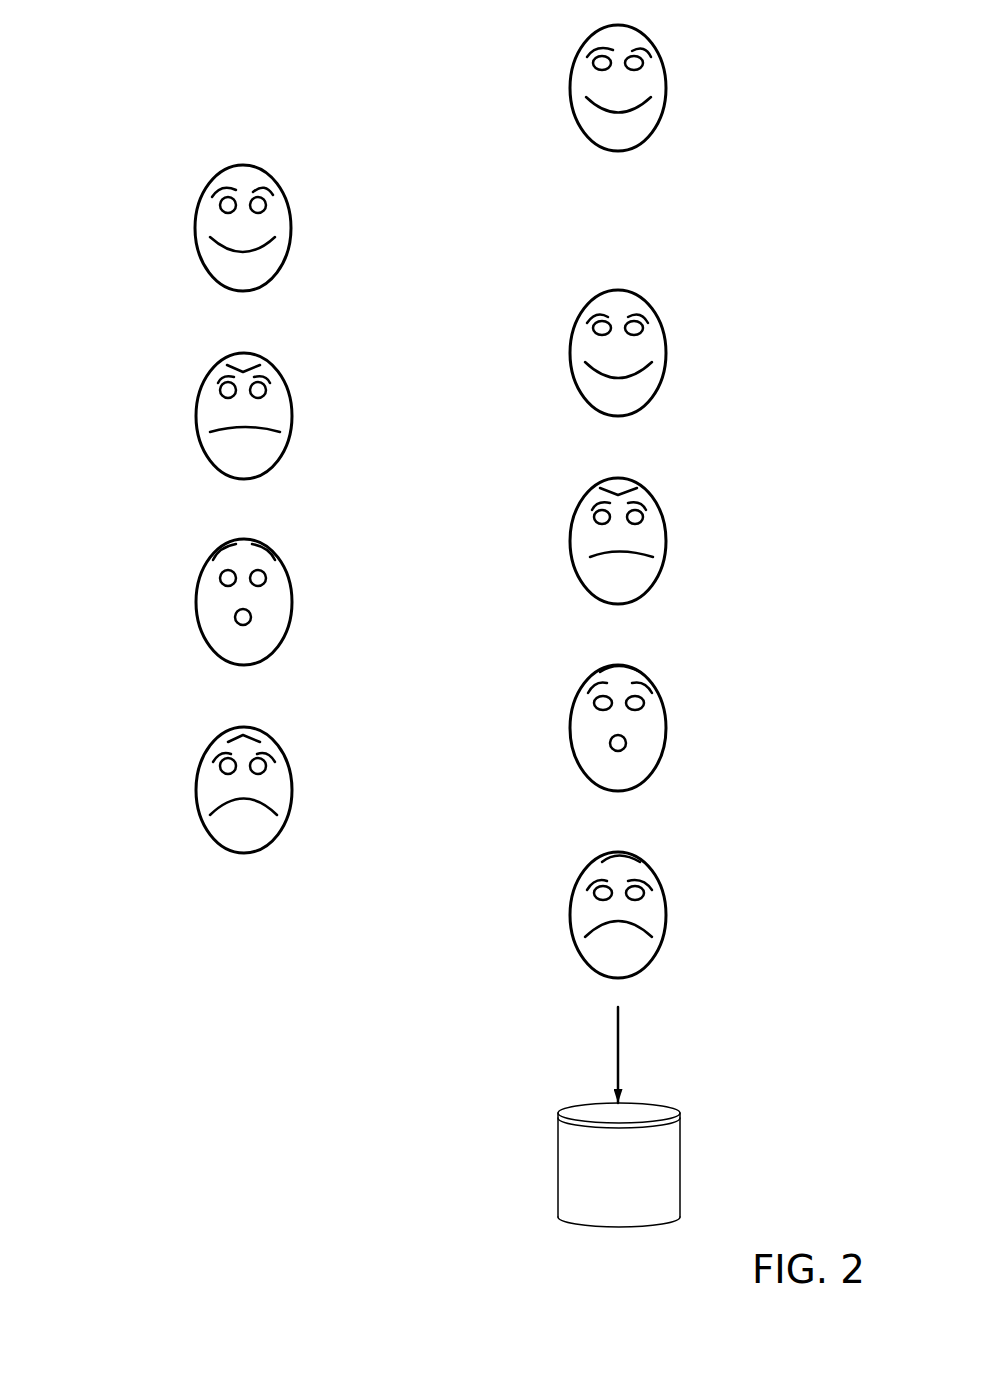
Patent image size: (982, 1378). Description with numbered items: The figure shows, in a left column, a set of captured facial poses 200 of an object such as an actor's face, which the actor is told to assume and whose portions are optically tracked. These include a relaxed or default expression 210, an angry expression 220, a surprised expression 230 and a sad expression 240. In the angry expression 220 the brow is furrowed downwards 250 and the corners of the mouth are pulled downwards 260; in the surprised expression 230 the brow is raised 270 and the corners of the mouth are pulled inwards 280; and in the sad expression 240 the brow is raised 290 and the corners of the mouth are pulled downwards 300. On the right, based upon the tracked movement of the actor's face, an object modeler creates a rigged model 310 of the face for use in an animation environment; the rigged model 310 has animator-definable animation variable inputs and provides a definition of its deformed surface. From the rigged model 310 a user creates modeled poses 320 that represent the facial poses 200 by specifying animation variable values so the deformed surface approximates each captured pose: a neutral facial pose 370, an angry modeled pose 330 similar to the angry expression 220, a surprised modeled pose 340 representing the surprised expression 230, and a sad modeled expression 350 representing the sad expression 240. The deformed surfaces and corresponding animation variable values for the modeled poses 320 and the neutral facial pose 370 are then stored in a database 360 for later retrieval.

The facial poses 200 is at (240, 133).
The relaxed or default expression 210 is at (196, 228).
The angry expression 220 is at (196, 416).
The surprised expression 230 is at (196, 602).
The sad expression 240 is at (196, 790).
The brow furrowed downwards 250 is at (283, 367).
The corners of the mouth pulled downwards 260 is at (283, 432).
The brow raised 270 is at (280, 545).
The corners of the mouth pulled inwards 280 is at (277, 618).
The brow raised 290 is at (283, 735).
The corners of the mouth pulled downwards 300 is at (283, 808).
The rigged model 310 is at (667, 88).
The modeled poses 320 is at (620, 256).
The angry modeled pose 330 is at (667, 541).
The surprised modeled pose 340 is at (667, 728).
The sad modeled expression 350 is at (667, 915).
The database 360 is at (680, 1160).
The neutral facial pose 370 is at (667, 353).